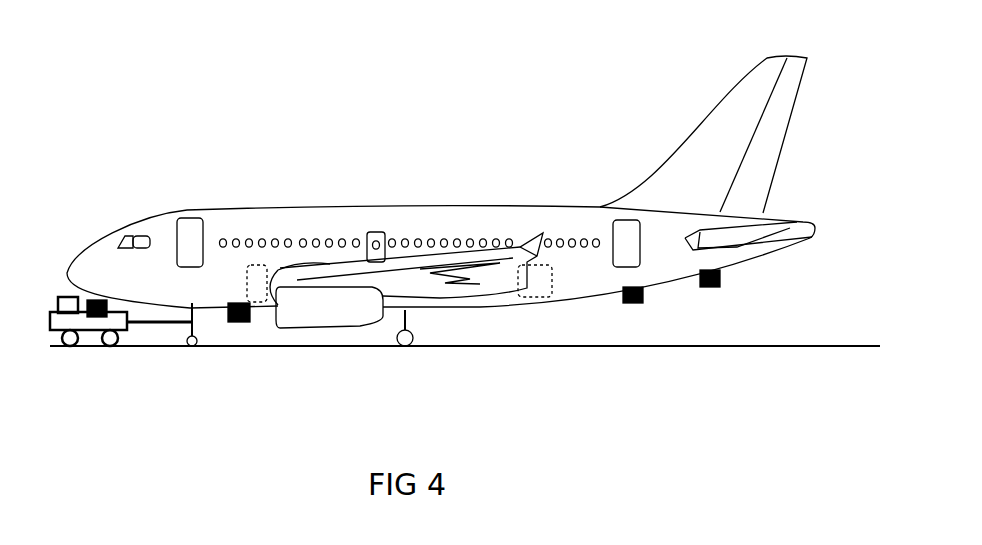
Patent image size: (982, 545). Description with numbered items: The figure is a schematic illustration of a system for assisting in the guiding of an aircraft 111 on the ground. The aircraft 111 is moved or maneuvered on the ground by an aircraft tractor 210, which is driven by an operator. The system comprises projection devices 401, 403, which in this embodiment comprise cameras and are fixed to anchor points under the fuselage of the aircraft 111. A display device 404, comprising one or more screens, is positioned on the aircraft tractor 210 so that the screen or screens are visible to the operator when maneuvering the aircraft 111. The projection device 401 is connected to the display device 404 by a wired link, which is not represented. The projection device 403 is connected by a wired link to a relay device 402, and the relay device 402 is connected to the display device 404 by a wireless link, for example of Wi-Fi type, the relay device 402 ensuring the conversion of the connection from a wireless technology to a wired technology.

The aircraft 111 is at (703, 134).
The aircraft tractor 210 is at (118, 338).
The projection device 401 is at (250, 320).
The relay device 402 is at (643, 295).
The projection device 403 is at (720, 277).
The display device 404 is at (98, 298).